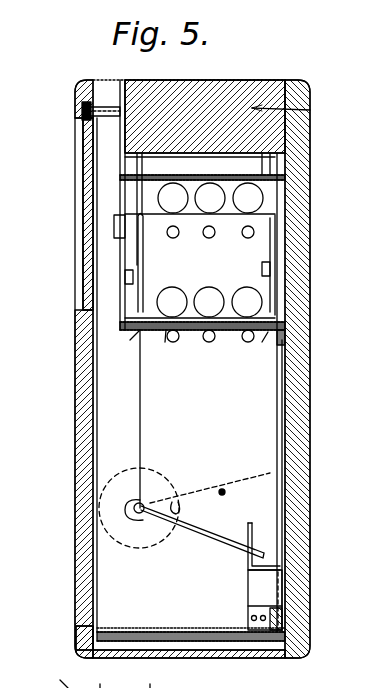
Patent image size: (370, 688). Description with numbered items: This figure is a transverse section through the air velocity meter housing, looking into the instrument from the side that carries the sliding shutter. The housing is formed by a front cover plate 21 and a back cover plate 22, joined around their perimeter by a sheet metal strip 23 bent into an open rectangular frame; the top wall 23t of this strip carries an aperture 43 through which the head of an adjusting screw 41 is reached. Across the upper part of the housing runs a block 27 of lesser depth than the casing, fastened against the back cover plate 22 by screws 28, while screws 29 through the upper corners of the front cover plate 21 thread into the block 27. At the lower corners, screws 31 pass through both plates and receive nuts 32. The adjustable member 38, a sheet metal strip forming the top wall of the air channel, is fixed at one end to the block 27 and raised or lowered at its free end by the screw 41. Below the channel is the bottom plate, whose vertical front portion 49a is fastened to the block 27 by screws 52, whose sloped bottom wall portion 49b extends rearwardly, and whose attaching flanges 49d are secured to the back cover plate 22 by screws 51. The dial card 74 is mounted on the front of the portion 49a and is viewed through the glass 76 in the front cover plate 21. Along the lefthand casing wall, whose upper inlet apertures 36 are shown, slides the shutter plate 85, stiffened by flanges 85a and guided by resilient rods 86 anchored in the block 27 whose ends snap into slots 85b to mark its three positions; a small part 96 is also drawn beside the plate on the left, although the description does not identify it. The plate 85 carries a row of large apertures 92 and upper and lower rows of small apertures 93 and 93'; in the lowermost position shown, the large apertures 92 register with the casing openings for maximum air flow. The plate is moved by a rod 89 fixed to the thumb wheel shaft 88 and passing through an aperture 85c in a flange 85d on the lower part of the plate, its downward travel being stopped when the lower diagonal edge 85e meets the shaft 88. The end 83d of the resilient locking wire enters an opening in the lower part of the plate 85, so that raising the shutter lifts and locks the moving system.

The front cover plate 21 is at (75, 381).
The back cover plate 22 is at (312, 383).
The sheet metal strip 23 is at (236, 80).
The block 27 is at (172, 90).
The screws 28 is at (310, 111).
The screws 29 is at (80, 112).
The screws 31 is at (258, 641).
The nuts 32 is at (78, 629).
The apertures 36 is at (180, 176).
The adjustable member 38 is at (292, 166).
The screw 41 is at (100, 679).
The aperture 43 is at (48, 678).
The top wall 23t is at (140, 679).
The vertical front portion 49a is at (130, 340).
The bottom wall portion 49b is at (165, 342).
The attaching flanges 49d is at (262, 342).
The screws 51 is at (309, 320).
The screws 52 is at (130, 82).
The card 74 is at (120, 135).
The glass 76 is at (90, 299).
The plate 85 is at (140, 399).
The stiffening flanges 85a is at (140, 258).
The slots 85b is at (135, 287).
The aperture 85c is at (248, 555).
The flange 85d is at (250, 580).
The lower diagonal edge 85e is at (176, 500).
The end of lifting spring 83d is at (225, 494).
The resilient rods 86 is at (147, 199).
The shaft 88 is at (135, 522).
The rod 89 is at (192, 530).
The apertures 92 is at (209, 288).
The apertures 93 is at (210, 242).
The apertures 93' is at (210, 357).
The block 96 is at (118, 228).